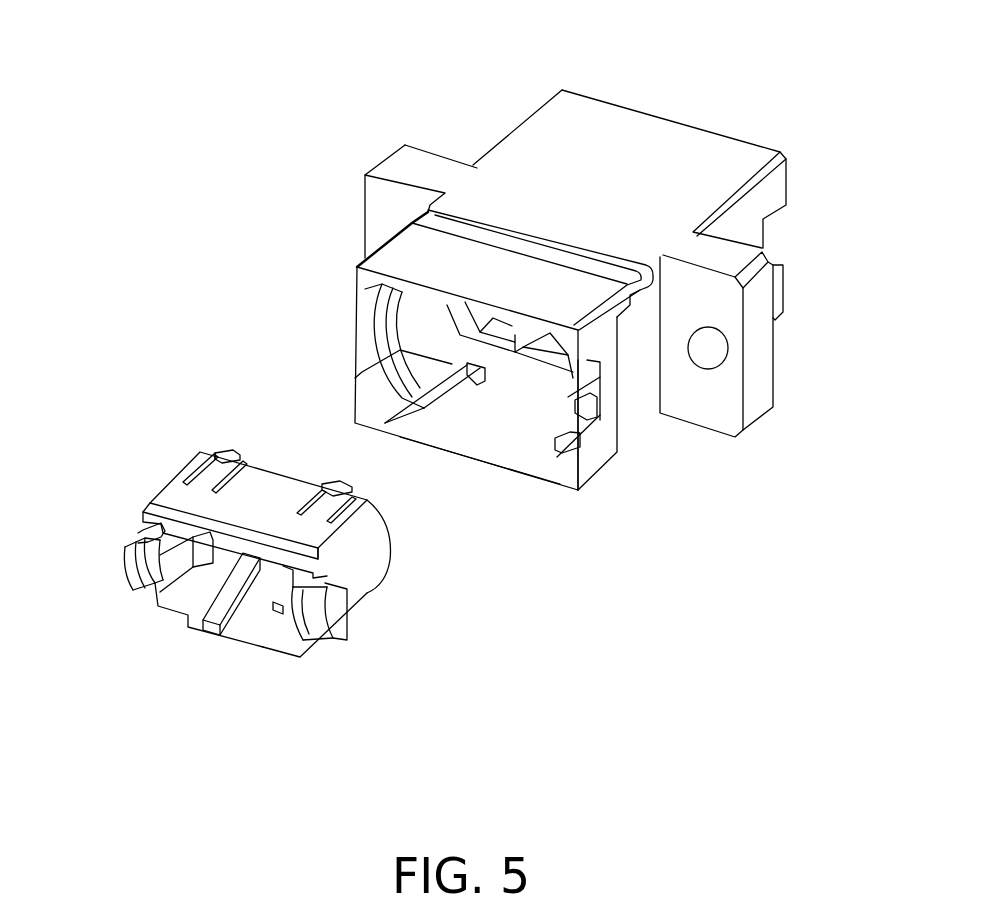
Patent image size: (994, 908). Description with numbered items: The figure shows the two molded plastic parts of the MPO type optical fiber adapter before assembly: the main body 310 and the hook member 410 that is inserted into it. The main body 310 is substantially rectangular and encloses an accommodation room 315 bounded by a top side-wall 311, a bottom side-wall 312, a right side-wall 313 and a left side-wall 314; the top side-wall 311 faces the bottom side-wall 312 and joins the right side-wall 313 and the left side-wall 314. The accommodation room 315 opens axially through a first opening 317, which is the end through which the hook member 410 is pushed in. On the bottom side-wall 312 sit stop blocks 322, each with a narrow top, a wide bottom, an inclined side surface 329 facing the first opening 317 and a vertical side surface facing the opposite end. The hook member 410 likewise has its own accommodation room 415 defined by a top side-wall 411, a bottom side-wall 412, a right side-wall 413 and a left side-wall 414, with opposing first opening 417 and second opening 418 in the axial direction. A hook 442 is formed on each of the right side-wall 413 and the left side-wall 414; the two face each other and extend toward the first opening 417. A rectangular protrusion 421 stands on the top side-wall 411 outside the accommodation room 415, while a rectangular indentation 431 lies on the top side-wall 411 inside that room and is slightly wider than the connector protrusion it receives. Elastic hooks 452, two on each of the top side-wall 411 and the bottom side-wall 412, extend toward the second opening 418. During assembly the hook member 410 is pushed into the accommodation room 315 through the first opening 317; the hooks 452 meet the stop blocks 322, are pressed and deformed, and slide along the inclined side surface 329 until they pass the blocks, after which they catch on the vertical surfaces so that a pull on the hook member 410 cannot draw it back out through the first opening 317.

The main body 310 is at (757, 87).
The top side-wall 311 is at (480, 457).
The bottom side-wall 312 is at (447, 243).
The right side-wall 313 is at (360, 393).
The left side-wall 314 is at (565, 470).
The accommodation room 315 is at (528, 403).
The first opening 317 is at (433, 340).
The stop block 322 is at (465, 366).
The inclined side surface 329 is at (468, 378).
The hook member 410 is at (108, 403).
The top side-wall 411 is at (167, 610).
The bottom side-wall 412 is at (273, 497).
The right side-wall 413 is at (201, 538).
The left side-wall 414 is at (388, 545).
The accommodation room 415 is at (205, 580).
The first opening 417 is at (195, 567).
The second opening 418 is at (293, 572).
The rectangular protrusion 421 is at (240, 645).
The rectangular indentation 431 is at (277, 610).
The hook 442 is at (132, 567).
The elastic hook 452 is at (228, 452).